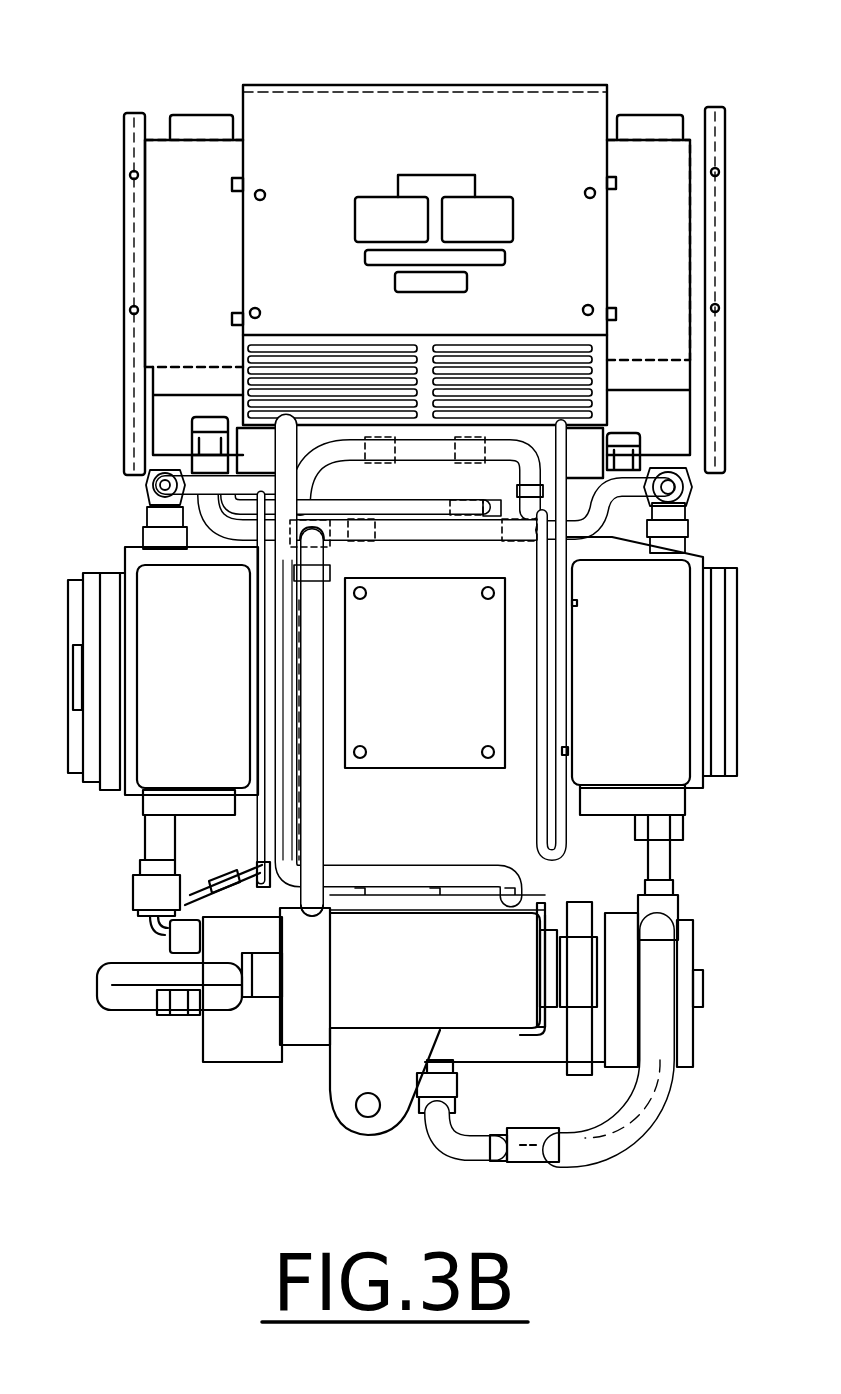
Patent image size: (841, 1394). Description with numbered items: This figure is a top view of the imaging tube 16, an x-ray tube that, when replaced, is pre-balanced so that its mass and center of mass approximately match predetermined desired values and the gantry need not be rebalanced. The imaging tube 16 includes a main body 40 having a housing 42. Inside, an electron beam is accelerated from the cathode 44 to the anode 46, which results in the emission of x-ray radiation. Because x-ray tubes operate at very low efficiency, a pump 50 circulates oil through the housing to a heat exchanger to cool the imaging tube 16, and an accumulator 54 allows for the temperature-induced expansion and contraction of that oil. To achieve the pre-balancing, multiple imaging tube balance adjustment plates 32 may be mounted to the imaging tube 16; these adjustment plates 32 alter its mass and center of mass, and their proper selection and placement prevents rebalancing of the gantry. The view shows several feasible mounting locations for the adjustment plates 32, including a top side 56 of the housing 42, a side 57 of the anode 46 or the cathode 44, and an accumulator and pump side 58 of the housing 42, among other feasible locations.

The imaging tube 16 is at (662, 63).
The imaging tube balance adjustment plate 32 is at (70, 577).
The main body 40 is at (512, 814).
The housing 42 is at (520, 890).
The cathode 44 is at (684, 790).
The anode 46 is at (127, 812).
The pump 50 is at (300, 1035).
The accumulator 54 is at (203, 1048).
The top side of the housing 56 is at (525, 862).
The side of the anode or cathode 57 is at (727, 603).
The accumulator and pump side of the housing 58 is at (392, 908).